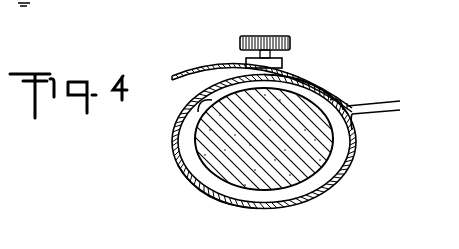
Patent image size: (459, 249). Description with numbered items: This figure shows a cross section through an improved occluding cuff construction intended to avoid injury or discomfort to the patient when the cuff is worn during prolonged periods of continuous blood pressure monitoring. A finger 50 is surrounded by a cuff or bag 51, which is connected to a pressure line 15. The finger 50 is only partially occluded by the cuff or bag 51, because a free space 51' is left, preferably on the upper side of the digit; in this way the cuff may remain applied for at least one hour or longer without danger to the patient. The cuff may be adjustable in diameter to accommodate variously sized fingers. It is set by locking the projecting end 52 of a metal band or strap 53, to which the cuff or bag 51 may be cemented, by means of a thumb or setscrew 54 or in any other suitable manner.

The pressure line 15 is at (381, 103).
The finger 50 is at (323, 157).
The cuff or bag 51 is at (264, 157).
The free space 51' is at (306, 80).
The projecting end 52 is at (208, 73).
The metal band or strap 53 is at (220, 206).
The thumb or setscrew 54 is at (283, 36).